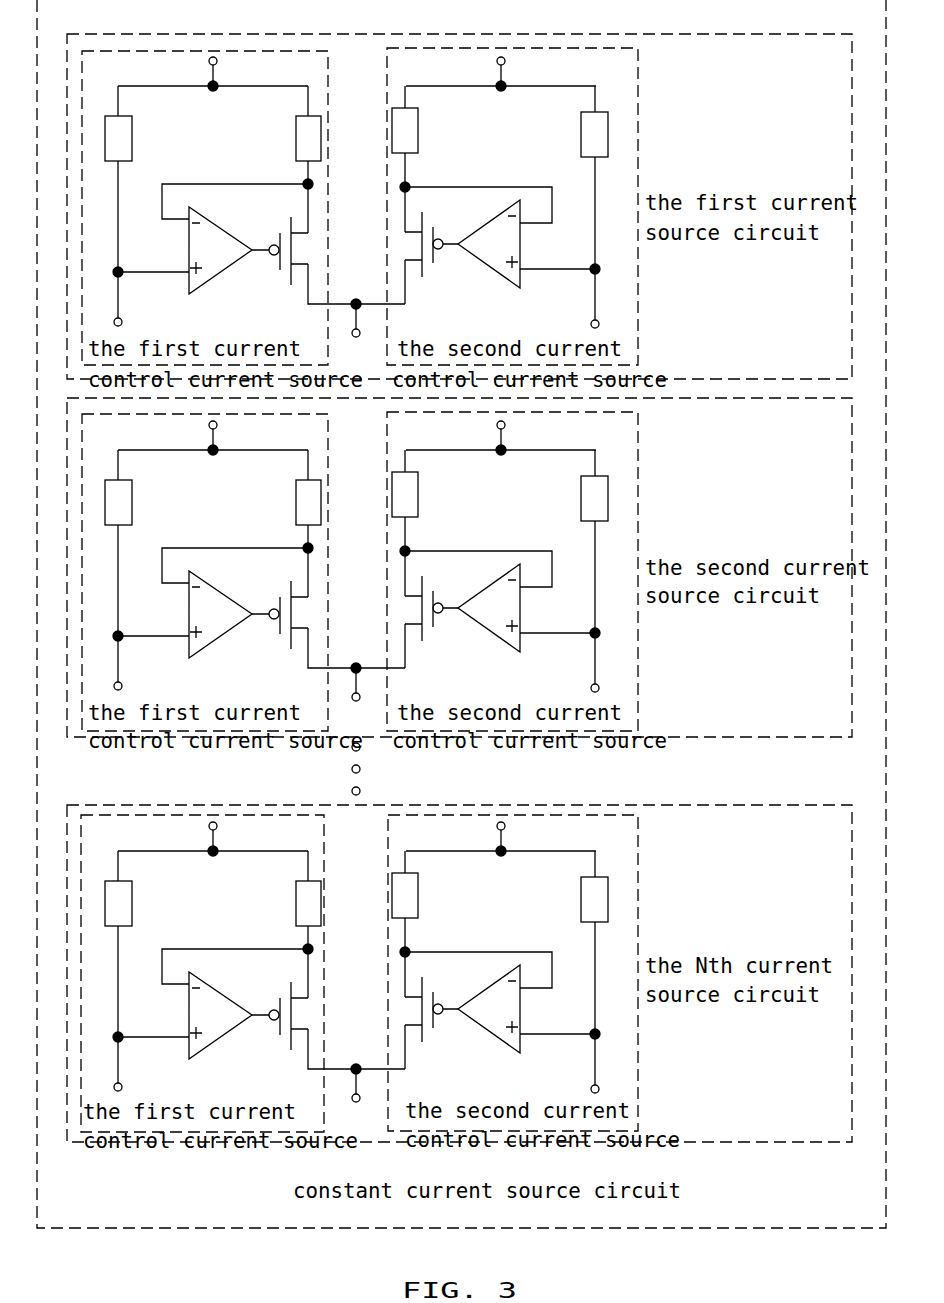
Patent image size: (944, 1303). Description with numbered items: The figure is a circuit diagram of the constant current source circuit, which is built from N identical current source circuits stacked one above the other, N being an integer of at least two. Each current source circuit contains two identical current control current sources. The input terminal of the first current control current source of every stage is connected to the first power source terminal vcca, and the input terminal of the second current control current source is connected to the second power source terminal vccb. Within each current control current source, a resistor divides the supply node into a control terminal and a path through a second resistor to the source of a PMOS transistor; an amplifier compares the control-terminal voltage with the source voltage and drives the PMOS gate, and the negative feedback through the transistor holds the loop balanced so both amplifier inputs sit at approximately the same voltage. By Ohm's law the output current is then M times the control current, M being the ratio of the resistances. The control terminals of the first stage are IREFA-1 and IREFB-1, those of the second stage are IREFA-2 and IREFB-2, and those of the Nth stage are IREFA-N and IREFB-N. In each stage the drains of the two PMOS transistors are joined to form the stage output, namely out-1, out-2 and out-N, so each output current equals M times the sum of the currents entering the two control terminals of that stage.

The control terminal of first current control current source IREFA-1 is at (169, 320).
The control terminal of second current control current source IREFB-1 is at (545, 323).
The output terminal of first current source circuit out-1 is at (362, 336).
The control terminal of first current control current source IREFA-2 is at (169, 684).
The control terminal of second current control current source IREFB-2 is at (545, 687).
The output terminal of second current source circuit out-2 is at (358, 699).
The control terminal of first current control current source IREFA-N is at (172, 1085).
The control terminal of second current control current source IREFB-N is at (543, 1088).
The output terminal of Nth current source circuit out-N is at (358, 1101).
The first power source terminal vcca is at (242, 448).
The second power source terminal vccb is at (529, 448).